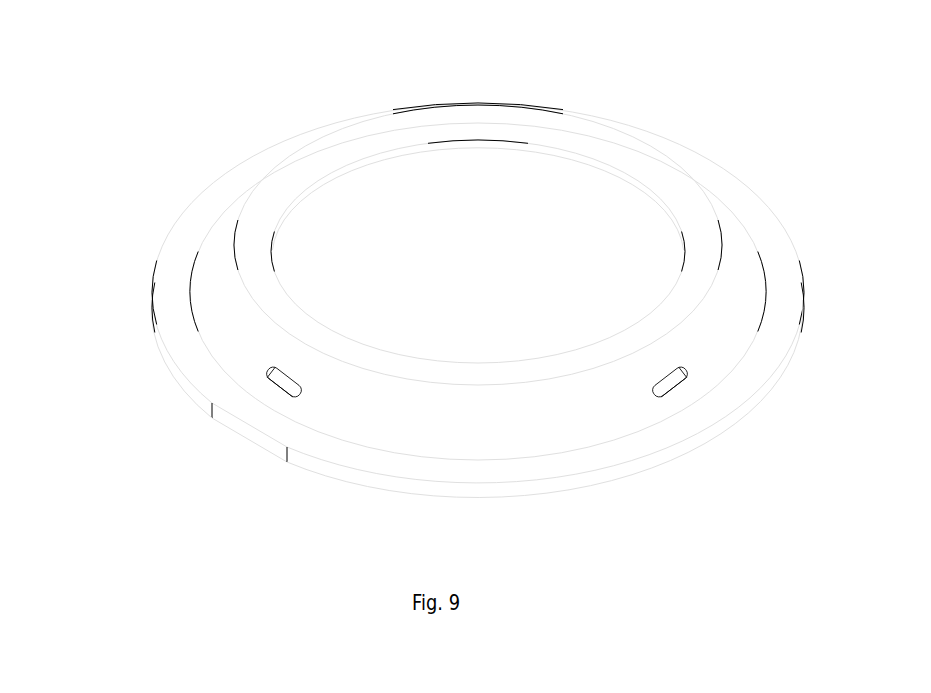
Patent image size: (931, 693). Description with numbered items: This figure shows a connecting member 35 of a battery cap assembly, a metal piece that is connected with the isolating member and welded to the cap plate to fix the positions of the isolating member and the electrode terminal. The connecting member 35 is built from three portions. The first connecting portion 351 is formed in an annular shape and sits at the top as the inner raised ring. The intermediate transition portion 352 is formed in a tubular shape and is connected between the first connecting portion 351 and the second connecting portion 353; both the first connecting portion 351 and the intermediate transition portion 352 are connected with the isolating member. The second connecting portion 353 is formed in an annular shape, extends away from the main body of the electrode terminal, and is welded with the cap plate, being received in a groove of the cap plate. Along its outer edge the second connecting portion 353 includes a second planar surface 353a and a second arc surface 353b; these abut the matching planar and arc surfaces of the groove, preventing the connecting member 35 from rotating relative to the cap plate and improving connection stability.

The connecting member 35 is at (507, 30).
The first connecting portion 351 is at (262, 215).
The intermediate transition portion 352 is at (235, 306).
The second connecting portion 353 is at (175, 258).
The second planar surface 353a is at (250, 433).
The second arc surface 353b is at (384, 478).